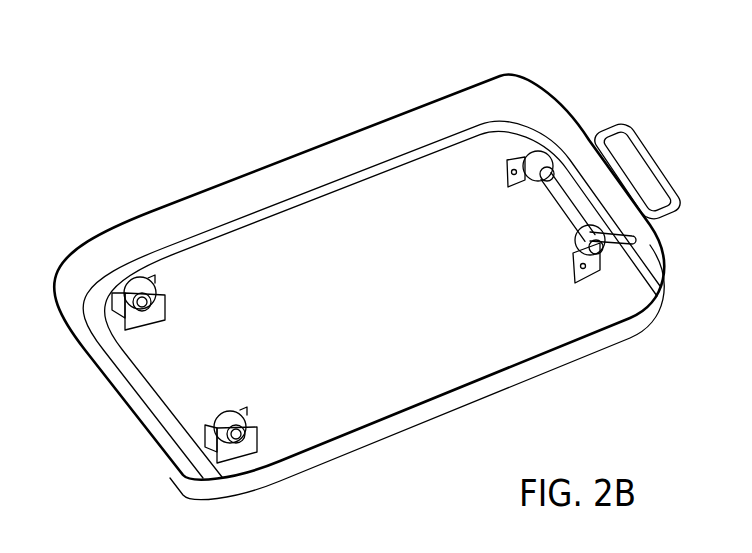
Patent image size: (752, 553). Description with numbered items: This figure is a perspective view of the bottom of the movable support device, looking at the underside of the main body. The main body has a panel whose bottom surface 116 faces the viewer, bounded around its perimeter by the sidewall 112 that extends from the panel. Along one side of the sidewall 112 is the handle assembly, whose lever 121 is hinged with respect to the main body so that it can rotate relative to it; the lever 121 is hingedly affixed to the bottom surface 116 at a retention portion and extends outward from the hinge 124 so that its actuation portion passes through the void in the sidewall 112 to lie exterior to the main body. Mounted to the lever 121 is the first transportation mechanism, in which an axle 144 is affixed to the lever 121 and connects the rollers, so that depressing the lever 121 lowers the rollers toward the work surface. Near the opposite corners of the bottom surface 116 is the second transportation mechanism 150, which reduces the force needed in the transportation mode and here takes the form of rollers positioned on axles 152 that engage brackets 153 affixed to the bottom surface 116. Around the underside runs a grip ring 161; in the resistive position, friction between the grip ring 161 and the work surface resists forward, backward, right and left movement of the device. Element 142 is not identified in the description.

The sidewall 112 is at (376, 124).
The bottom surface 116 is at (388, 302).
The lever 121 is at (609, 124).
The hinge 124 is at (591, 283).
The upper bushing bracket 142 is at (519, 158).
The axle 144 is at (563, 200).
The second transportation mechanism 150 is at (188, 398).
The axle 152 is at (237, 437).
The bracket 153 is at (167, 300).
The grip ring 161 is at (445, 393).